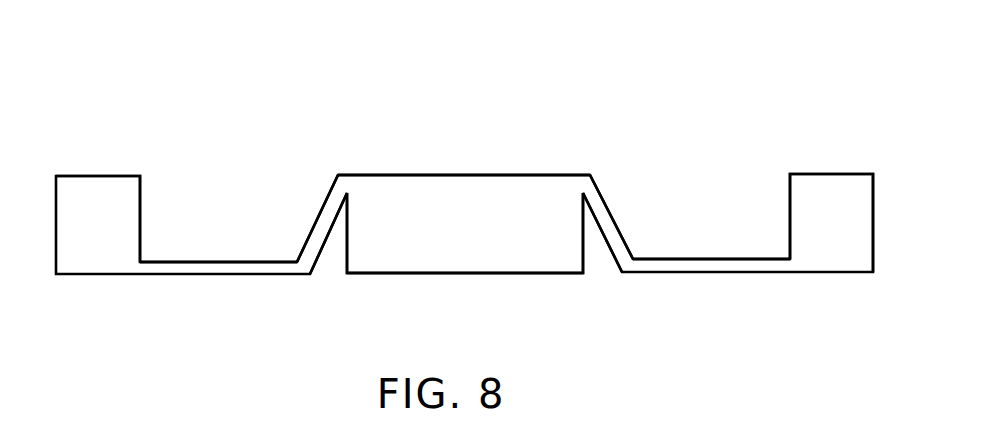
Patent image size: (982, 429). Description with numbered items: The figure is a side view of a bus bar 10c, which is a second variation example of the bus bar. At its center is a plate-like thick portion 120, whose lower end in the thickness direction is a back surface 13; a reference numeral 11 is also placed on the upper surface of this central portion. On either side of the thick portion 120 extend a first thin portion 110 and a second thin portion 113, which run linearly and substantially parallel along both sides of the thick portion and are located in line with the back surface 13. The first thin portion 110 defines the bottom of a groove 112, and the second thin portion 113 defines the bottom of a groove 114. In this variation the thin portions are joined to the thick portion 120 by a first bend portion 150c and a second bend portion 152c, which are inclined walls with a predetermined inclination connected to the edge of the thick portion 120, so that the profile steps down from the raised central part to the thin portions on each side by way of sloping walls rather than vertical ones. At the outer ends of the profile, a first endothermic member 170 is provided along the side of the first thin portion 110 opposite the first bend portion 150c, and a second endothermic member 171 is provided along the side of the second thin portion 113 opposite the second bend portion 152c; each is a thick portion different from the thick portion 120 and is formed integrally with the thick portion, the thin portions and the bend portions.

The bus bar 10c is at (784, 91).
The base portion 11 is at (548, 175).
The back surface 13 is at (417, 274).
The first thin portion 110 is at (195, 262).
The groove 112 is at (186, 180).
The second thin portion 113 is at (727, 259).
The groove 114 is at (726, 180).
The thick portion 120 is at (384, 166).
The first bend portion 150c is at (322, 210).
The second bend portion 152c is at (607, 200).
The first endothermic member 170 is at (95, 176).
The second endothermic member 171 is at (836, 174).